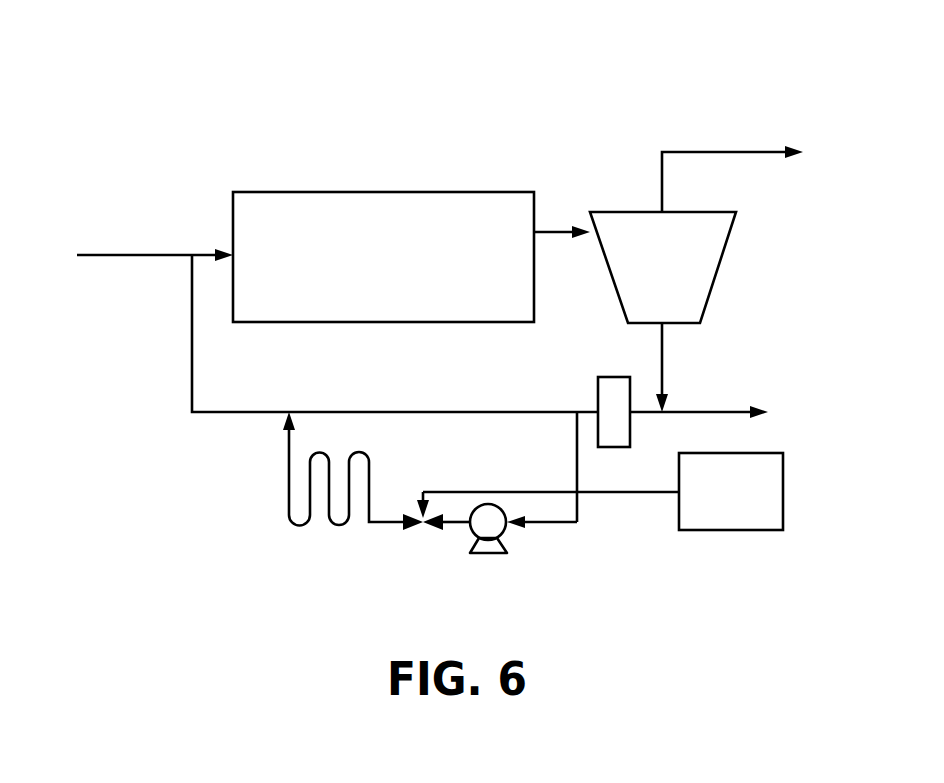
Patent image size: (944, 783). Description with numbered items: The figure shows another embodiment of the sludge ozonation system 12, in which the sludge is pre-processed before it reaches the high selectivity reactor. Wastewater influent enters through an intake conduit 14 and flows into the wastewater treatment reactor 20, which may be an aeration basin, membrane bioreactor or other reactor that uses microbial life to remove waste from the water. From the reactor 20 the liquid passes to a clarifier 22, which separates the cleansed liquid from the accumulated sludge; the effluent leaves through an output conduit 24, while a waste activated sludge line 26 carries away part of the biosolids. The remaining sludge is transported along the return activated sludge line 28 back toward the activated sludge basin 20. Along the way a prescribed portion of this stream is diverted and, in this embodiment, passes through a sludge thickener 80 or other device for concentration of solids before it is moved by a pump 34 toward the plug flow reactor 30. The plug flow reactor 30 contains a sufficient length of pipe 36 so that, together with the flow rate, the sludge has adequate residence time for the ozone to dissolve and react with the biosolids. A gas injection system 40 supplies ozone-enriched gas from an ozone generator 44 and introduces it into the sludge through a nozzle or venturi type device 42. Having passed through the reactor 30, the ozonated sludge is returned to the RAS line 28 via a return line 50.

The sludge ozonation system 12 is at (112, 147).
The intake conduit 14 is at (103, 255).
The wastewater treatment reactor 20 is at (431, 192).
The clarifier 22 is at (707, 267).
The output conduit 24 is at (717, 152).
The waste activated sludge line 26 is at (698, 412).
The return activated sludge line 28 is at (484, 412).
The plug flow reactor 30 is at (297, 570).
The pump 34 is at (492, 553).
The pipe 36 is at (369, 452).
The gas injection system 40 is at (640, 535).
The nozzle or venturi type device 42 is at (417, 525).
The ozone generator 44 is at (774, 490).
The return line 50 is at (289, 457).
The sludge thickener 80 is at (615, 377).